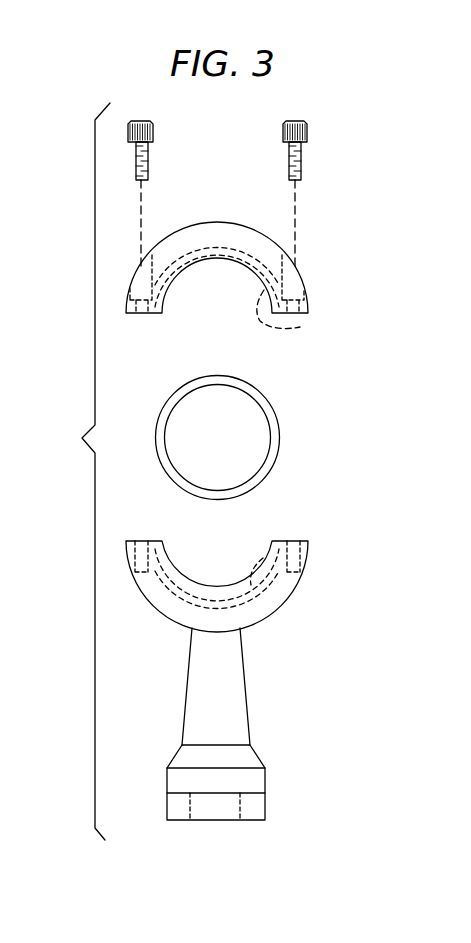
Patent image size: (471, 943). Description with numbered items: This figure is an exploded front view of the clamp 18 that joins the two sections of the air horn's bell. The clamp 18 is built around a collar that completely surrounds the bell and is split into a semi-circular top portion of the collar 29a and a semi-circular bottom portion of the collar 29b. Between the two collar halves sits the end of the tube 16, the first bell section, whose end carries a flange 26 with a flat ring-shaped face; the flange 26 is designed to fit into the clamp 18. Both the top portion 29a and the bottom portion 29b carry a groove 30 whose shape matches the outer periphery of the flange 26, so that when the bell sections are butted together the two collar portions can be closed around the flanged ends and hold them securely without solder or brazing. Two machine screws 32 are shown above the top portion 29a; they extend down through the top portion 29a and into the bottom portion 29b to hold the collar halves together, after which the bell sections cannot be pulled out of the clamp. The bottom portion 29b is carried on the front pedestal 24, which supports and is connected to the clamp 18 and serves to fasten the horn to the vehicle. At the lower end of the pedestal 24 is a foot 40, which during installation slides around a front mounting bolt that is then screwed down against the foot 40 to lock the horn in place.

The clamp 18 is at (365, 276).
The machine screws 32 is at (305, 163).
The top portion of the collar 29a is at (187, 227).
The groove 30 is at (300, 327).
The flange 26 is at (263, 470).
The tube 16 is at (255, 413).
The bottom portion of the collar 29b is at (290, 597).
The front pedestal 24 is at (250, 718).
The foot 40 is at (265, 803).